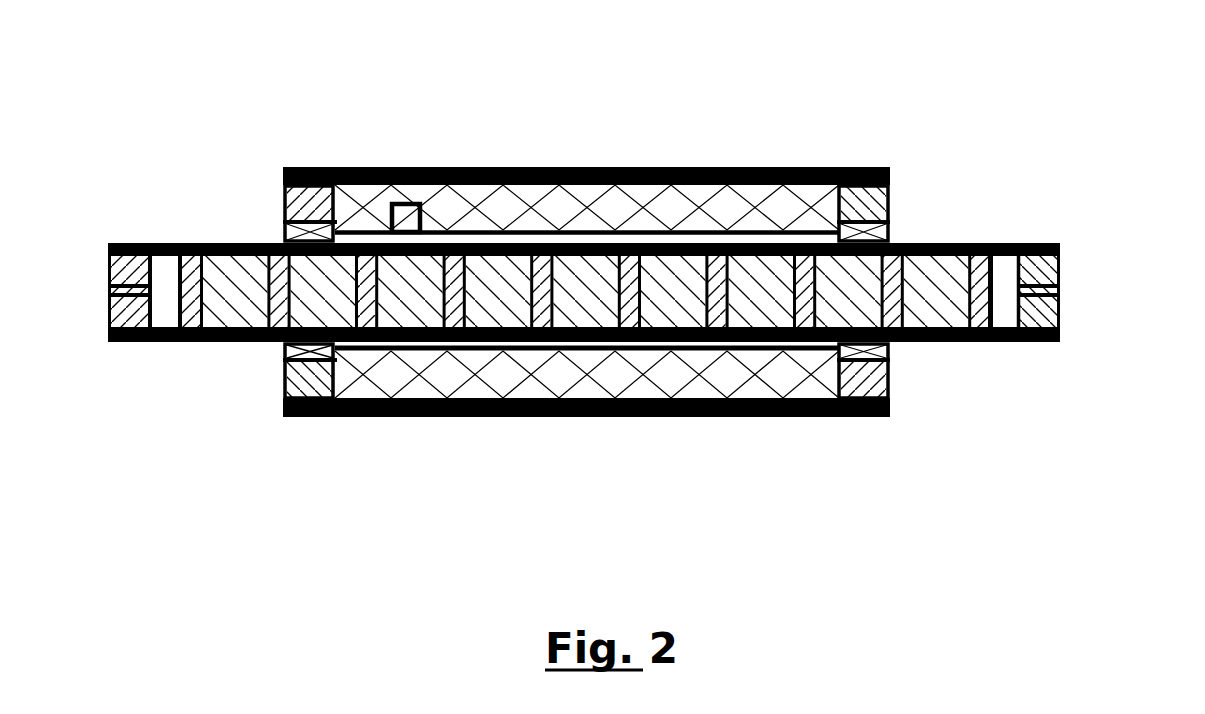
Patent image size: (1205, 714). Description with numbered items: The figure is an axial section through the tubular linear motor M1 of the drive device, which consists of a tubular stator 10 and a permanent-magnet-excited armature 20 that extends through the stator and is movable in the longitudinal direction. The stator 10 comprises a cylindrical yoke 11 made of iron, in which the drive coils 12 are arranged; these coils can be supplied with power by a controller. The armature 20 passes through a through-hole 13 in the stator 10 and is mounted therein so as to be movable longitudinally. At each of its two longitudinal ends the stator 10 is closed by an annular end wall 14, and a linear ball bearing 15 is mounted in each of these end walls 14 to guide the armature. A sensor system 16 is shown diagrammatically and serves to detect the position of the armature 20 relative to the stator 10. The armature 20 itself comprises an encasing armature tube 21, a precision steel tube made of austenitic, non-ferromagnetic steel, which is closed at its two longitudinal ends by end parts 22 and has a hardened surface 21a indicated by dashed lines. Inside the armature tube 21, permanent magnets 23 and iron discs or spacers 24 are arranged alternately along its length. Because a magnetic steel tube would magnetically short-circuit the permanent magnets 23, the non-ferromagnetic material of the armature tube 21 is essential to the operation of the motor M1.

The tubular stator 10 is at (586, 424).
The cylindrical yoke 11 is at (538, 418).
The drive coils 12 is at (635, 418).
The through-hole 13 is at (688, 349).
The annular end wall 14 is at (282, 198).
The linear ball bearing 15 is at (282, 233).
The sensor system 16 is at (405, 203).
The armature 20 is at (587, 287).
The armature tube 21 is at (165, 243).
The hardened surface 21a is at (1040, 243).
The end parts 22 is at (105, 315).
The permanent magnets 23 is at (235, 343).
The iron discs or spacers 24 is at (190, 343).
The tubular linear motor M1 is at (584, 131).